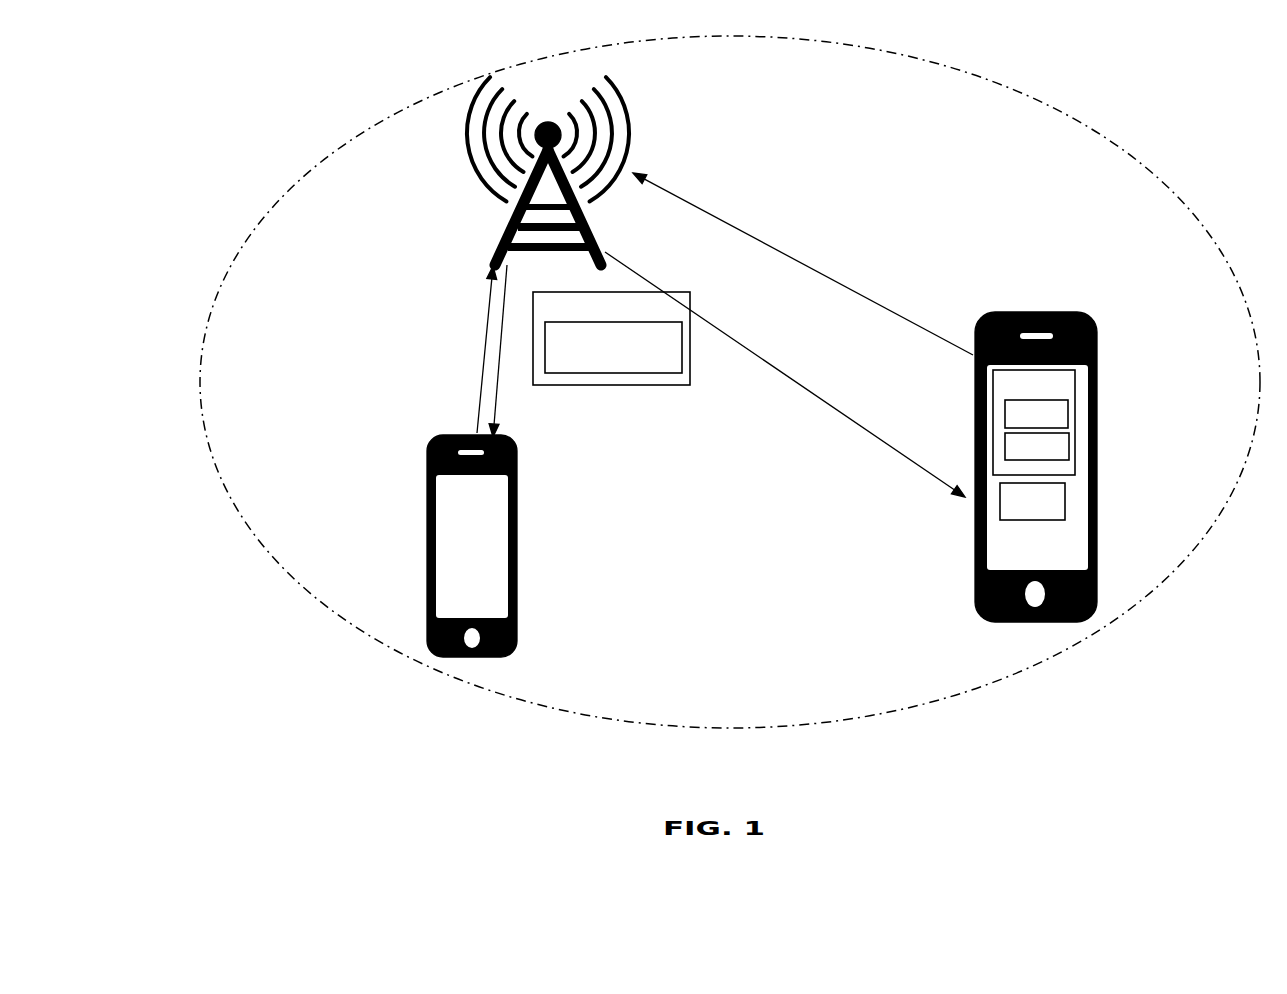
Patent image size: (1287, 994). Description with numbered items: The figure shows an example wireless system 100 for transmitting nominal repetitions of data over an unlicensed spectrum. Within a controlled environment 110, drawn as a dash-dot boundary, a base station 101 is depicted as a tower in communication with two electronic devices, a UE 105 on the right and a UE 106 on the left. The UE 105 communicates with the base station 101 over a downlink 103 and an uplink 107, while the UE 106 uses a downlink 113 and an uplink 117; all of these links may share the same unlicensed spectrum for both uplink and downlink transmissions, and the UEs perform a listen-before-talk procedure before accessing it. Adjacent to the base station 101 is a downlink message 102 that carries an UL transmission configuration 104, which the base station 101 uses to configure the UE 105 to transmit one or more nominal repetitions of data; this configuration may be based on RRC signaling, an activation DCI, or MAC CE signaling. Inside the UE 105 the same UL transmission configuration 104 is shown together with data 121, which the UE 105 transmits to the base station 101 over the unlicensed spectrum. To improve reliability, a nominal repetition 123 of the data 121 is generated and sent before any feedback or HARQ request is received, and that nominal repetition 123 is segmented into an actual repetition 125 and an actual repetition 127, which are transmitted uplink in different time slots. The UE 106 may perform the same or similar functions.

The wireless system 100 is at (247, 125).
The controlled environment 110 is at (247, 243).
The base station 101 is at (523, 227).
The downlink message 102 is at (611, 338).
The UL transmission configuration 104 is at (805, 442).
The downlink 103 is at (815, 393).
The uplink 107 is at (903, 318).
The downlink 113 is at (515, 351).
The uplink 117 is at (465, 349).
The UE 105 is at (1092, 327).
The UE 106 is at (472, 546).
The nominal repetition 123 is at (1034, 422).
The actual repetition 125 is at (1036, 414).
The actual repetition 127 is at (1037, 447).
The data 121 is at (1032, 501).